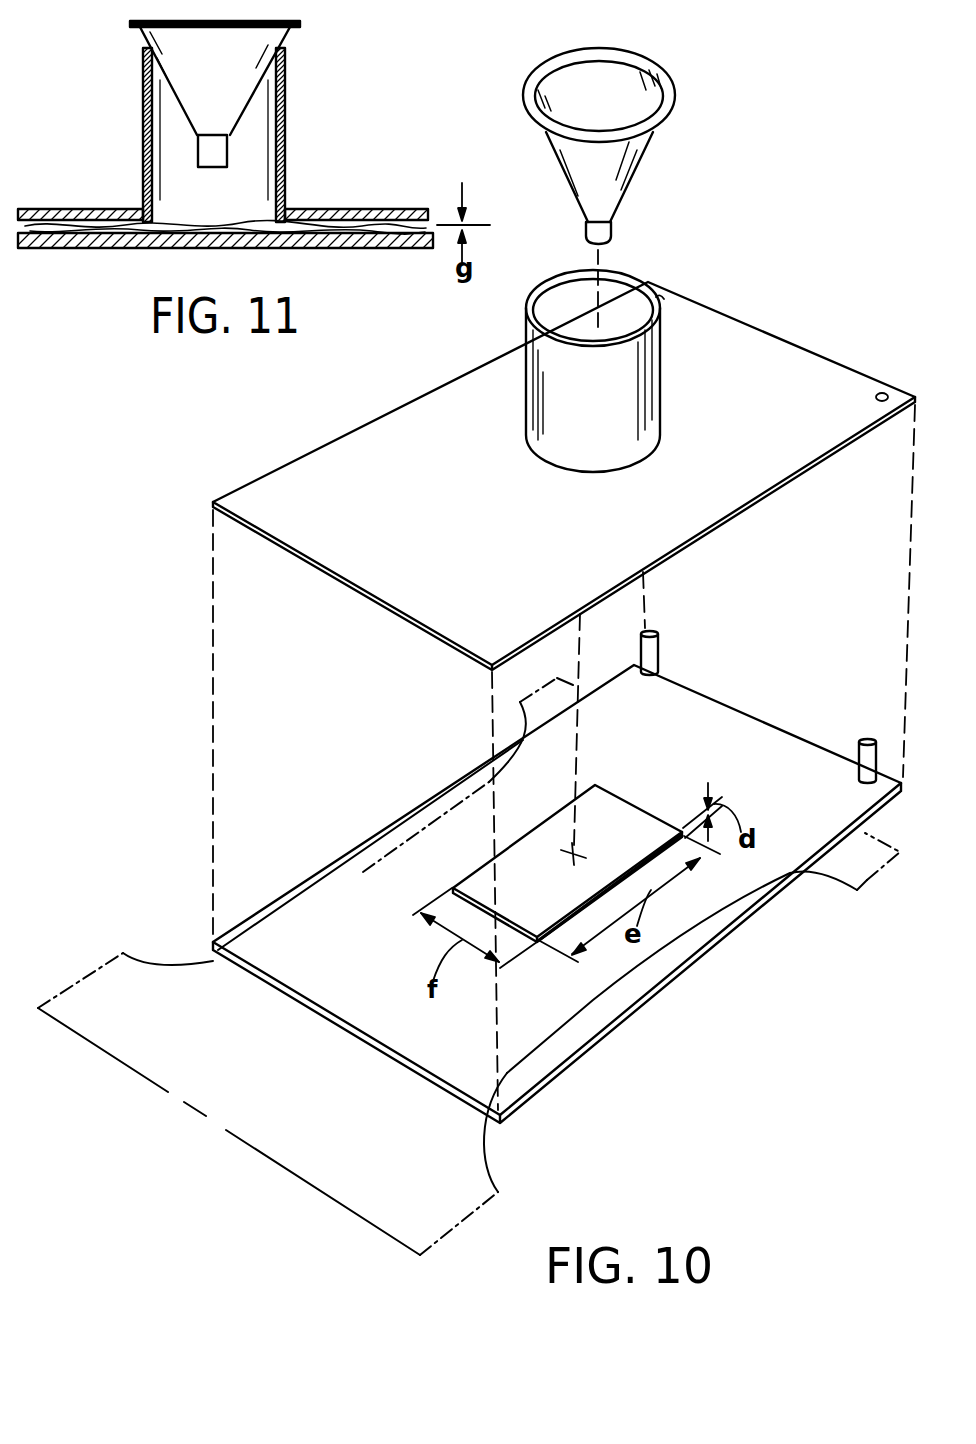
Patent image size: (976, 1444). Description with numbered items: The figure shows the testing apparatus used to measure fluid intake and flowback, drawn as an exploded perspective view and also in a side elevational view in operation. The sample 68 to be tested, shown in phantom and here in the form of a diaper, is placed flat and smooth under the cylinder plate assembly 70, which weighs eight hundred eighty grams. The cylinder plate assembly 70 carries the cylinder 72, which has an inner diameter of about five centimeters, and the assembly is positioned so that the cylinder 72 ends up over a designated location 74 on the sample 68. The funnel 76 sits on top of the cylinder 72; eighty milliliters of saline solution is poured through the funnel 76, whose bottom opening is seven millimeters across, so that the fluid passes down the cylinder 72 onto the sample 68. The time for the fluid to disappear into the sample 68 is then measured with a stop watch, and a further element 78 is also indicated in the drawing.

In FIG. 10, the absorbent web sheet 68 is at (170, 1070).
In FIG. 11, the top plate 70 is at (13, 209).
In FIG. 10, the top plate 70 is at (304, 473).
In FIG. 11, the cylinder 72 is at (288, 128).
In FIG. 10, the cylinder 72 is at (640, 357).
In FIG. 10, the center target point 74 is at (594, 851).
In FIG. 11, the funnel 76 is at (290, 32).
In FIG. 10, the funnel 76 is at (655, 71).
In FIG. 10, the test sample 78 is at (462, 862).